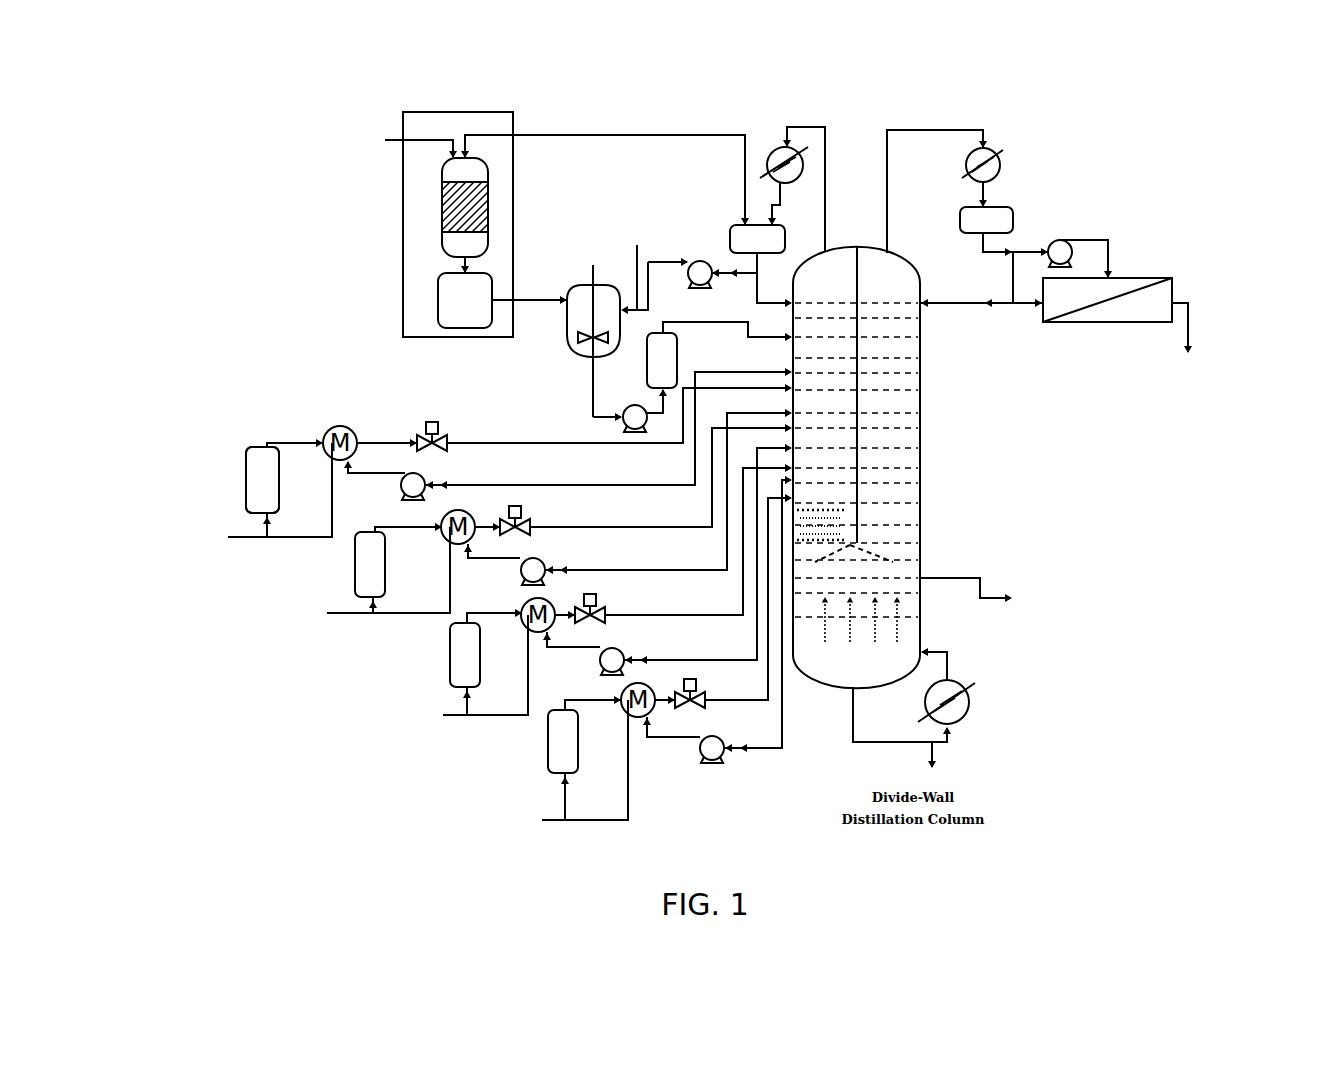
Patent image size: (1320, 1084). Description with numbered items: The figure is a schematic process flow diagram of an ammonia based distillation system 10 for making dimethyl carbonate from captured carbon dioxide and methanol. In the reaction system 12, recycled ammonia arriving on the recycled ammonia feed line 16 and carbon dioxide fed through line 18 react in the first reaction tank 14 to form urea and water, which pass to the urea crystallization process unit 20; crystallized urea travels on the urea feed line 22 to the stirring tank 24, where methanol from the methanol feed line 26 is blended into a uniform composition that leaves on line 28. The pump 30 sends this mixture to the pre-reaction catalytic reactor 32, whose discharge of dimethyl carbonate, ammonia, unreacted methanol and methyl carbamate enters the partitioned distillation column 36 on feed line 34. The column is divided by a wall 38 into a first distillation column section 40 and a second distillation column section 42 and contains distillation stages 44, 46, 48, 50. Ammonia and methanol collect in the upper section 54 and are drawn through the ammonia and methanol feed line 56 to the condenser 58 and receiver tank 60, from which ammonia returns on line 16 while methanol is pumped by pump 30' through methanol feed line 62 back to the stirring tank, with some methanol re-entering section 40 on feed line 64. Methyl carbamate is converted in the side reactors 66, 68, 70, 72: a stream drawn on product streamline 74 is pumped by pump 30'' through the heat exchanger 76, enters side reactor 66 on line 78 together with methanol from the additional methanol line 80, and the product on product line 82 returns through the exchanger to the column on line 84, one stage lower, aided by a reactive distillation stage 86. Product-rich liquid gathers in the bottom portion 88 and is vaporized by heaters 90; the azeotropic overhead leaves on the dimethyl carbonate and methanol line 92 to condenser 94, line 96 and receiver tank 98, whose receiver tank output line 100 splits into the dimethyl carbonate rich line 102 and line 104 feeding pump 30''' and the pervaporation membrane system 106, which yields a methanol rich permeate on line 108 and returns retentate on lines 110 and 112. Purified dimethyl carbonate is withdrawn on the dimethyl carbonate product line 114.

The ammonia based distillation system 10 is at (1225, 736).
The reaction system 12 is at (403, 222).
The first reaction tank 14 is at (488, 178).
The recycled ammonia feed line 16 is at (565, 133).
The line 18 is at (385, 140).
The urea crystallization process unit 20 is at (438, 302).
The urea feed line 22 is at (530, 300).
The stirring tank 24 is at (572, 348).
The methanol feed line 26 is at (635, 260).
The line 28 is at (593, 372).
The pump 30 is at (592, 423).
The pump 30' is at (681, 239).
The pump 30'' is at (460, 473).
The pump 30''' is at (1107, 220).
The pre-reaction catalytic reactor 32 is at (647, 358).
The feed line 34 is at (695, 322).
The partitioned distillation column 36 is at (920, 397).
The dividing wall 38 is at (857, 437).
The first distillation column section 40 is at (826, 286).
The second distillation column section 42 is at (889, 286).
The distillation stage 44 is at (820, 348).
The distillation stage 46 is at (820, 401).
The distillation stage 48 is at (820, 437).
The distillation stage 50 is at (820, 489).
The upper section 54 is at (835, 253).
The ammonia and methanol feed line 56 is at (830, 152).
The condenser 58 is at (778, 143).
The receiver tank 60 is at (733, 224).
The methanol feed line 62 is at (645, 260).
The feed line 64 is at (757, 292).
The side reactor 66 is at (247, 493).
The side reactor 68 is at (357, 597).
The side reactor 70 is at (450, 687).
The side reactor 72 is at (548, 773).
The product streamline 74 is at (747, 372).
The heat exchanger 76 is at (360, 428).
The line 78 is at (333, 528).
The additional methanol line 80 is at (248, 538).
The product line 82 is at (300, 437).
The line 84 is at (470, 440).
The reactive distillation stage 86 is at (843, 510).
The bottom portion 88 is at (893, 710).
The heater 90 is at (969, 697).
The dimethyl carbonate and methanol line 92 is at (885, 220).
The condenser 94 is at (1000, 158).
The line 96 is at (990, 182).
The receiver tank 98 is at (1013, 215).
The receiver tank output line 100 is at (983, 245).
The dimethyl carbonate rich line 102 is at (1013, 273).
The line 104 is at (1033, 248).
The pervaporation membrane system 106 is at (1128, 322).
The line 108 is at (1192, 312).
The line 110 is at (1043, 305).
The line 112 is at (963, 302).
The dimethyl carbonate product line 114 is at (975, 578).